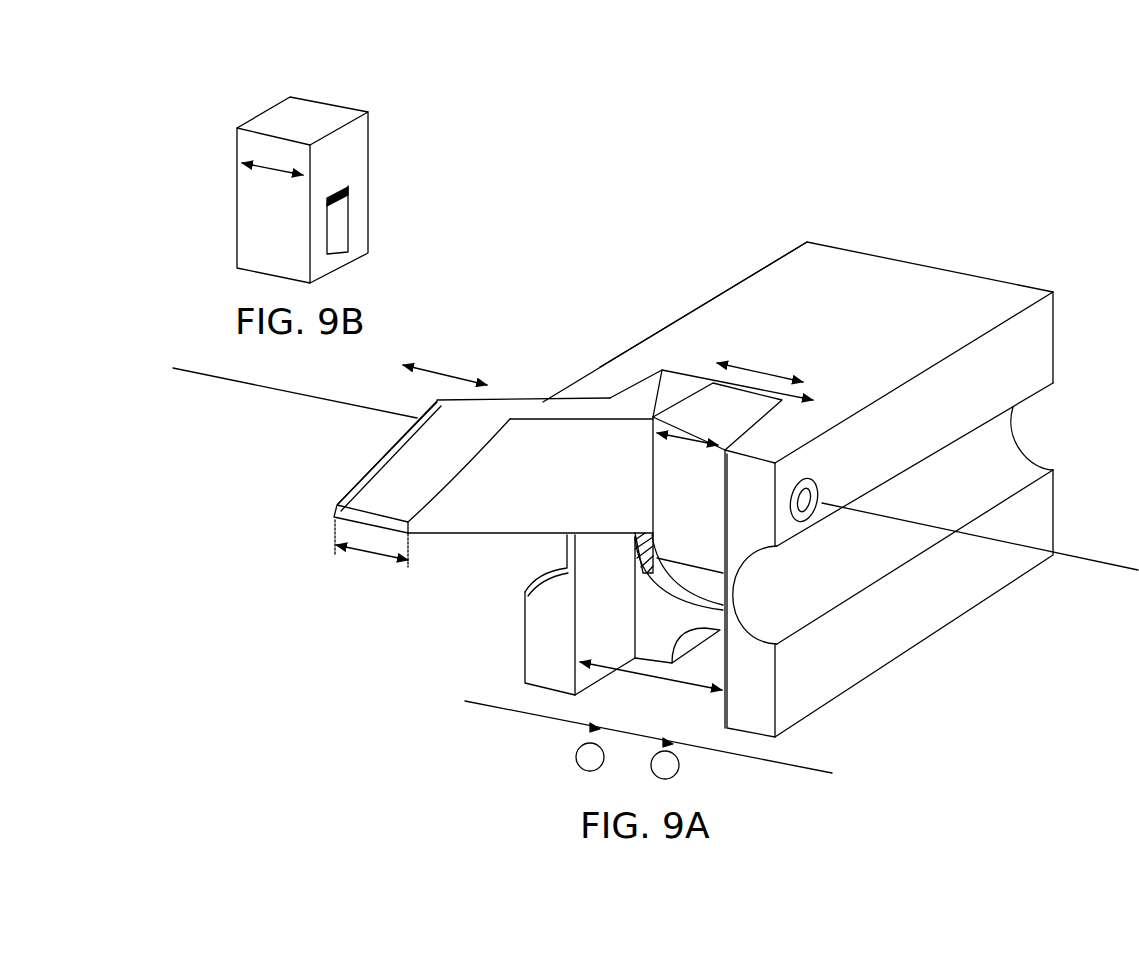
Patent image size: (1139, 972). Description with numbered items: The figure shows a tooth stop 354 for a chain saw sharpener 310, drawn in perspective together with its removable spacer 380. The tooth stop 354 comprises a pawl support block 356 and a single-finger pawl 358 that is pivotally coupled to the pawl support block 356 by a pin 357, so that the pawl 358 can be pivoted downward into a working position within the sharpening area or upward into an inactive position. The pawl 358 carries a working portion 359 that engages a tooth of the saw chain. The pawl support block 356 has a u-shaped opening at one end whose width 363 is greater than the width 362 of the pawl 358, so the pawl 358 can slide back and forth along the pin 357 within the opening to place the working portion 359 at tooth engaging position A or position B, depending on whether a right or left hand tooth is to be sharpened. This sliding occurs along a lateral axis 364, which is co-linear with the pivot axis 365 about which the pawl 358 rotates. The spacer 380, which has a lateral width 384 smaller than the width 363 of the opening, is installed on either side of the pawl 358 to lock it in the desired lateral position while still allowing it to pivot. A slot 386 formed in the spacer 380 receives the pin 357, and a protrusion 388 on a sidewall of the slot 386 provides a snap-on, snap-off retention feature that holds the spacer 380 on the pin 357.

In FIG. 9A, the surgical stapling device 310 is at (620, 690).
In FIG. 9A, the tooth stop 354 is at (811, 452).
In FIG. 9A, the pawl support block 356 is at (767, 297).
In FIG. 9A, the pin 357 is at (820, 513).
In FIG. 9A, the pawl 358 is at (519, 546).
In FIG. 9A, the working portion 359 is at (405, 485).
In FIG. 9A, the width of the pawl 362 is at (373, 553).
In FIG. 9A, the width of the opening 363 is at (697, 672).
In FIG. 9A, the lateral axis 364 is at (298, 400).
In FIG. 9A, the pivot axis 365 is at (1117, 578).
In FIG. 9B, the spacer 380 is at (353, 145).
In FIG. 9A, the spacer 380 is at (608, 490).
In FIG. 9B, the lateral width of the spacer 384 is at (277, 172).
In FIG. 9A, the lateral width of the spacer 384 is at (690, 430).
In FIG. 9B, the slot 386 is at (340, 268).
In FIG. 9B, the protrusion 388 is at (340, 186).
In FIG. 9A, the protrusion 388 is at (644, 595).